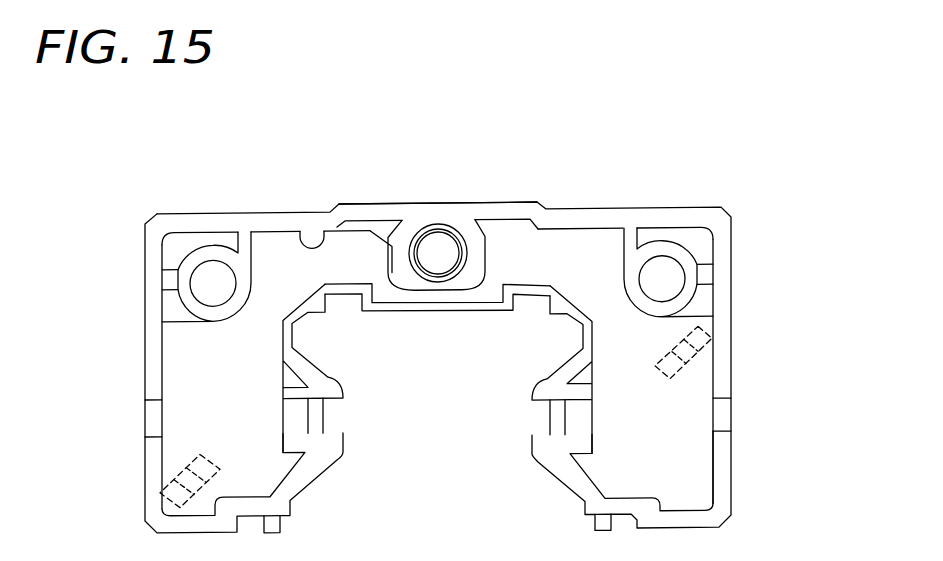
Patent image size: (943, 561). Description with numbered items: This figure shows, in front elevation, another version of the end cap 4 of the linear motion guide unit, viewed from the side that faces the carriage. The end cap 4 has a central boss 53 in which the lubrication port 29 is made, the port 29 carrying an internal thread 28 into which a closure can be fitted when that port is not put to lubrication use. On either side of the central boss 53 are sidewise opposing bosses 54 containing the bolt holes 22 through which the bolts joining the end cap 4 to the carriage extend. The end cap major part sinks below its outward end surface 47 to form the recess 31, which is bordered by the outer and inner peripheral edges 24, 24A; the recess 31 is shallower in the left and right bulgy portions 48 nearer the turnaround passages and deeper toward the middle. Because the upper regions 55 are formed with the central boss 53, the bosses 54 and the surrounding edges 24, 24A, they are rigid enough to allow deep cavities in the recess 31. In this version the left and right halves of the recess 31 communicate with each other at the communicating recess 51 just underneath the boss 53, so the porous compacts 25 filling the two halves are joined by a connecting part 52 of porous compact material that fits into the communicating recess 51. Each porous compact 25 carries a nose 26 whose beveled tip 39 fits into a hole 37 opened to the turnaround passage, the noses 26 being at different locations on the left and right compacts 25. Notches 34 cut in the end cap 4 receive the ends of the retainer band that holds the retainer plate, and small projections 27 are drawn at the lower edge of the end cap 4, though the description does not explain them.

The end cap 4 is at (697, 207).
The bolt hole 22 is at (210, 270).
The outer peripheral edge 24 is at (150, 349).
The inner peripheral edge 24A is at (572, 369).
The porous compact 25 is at (215, 366).
The nose 26 is at (168, 493).
The foot projection 27 is at (270, 525).
The internal thread 28 is at (460, 238).
The lubrication port 29 is at (440, 248).
The recess 31 is at (325, 233).
The notch 34 is at (293, 436).
The hole 37 is at (185, 467).
The beveled tip 39 is at (190, 468).
The outward end surface 47 is at (182, 282).
The bulgy portion 48 is at (687, 469).
The communicating recess 51 is at (437, 298).
The connecting part 52 is at (486, 300).
The boss 53 is at (384, 222).
The boss 54 is at (223, 248).
The upper region 55 is at (540, 254).